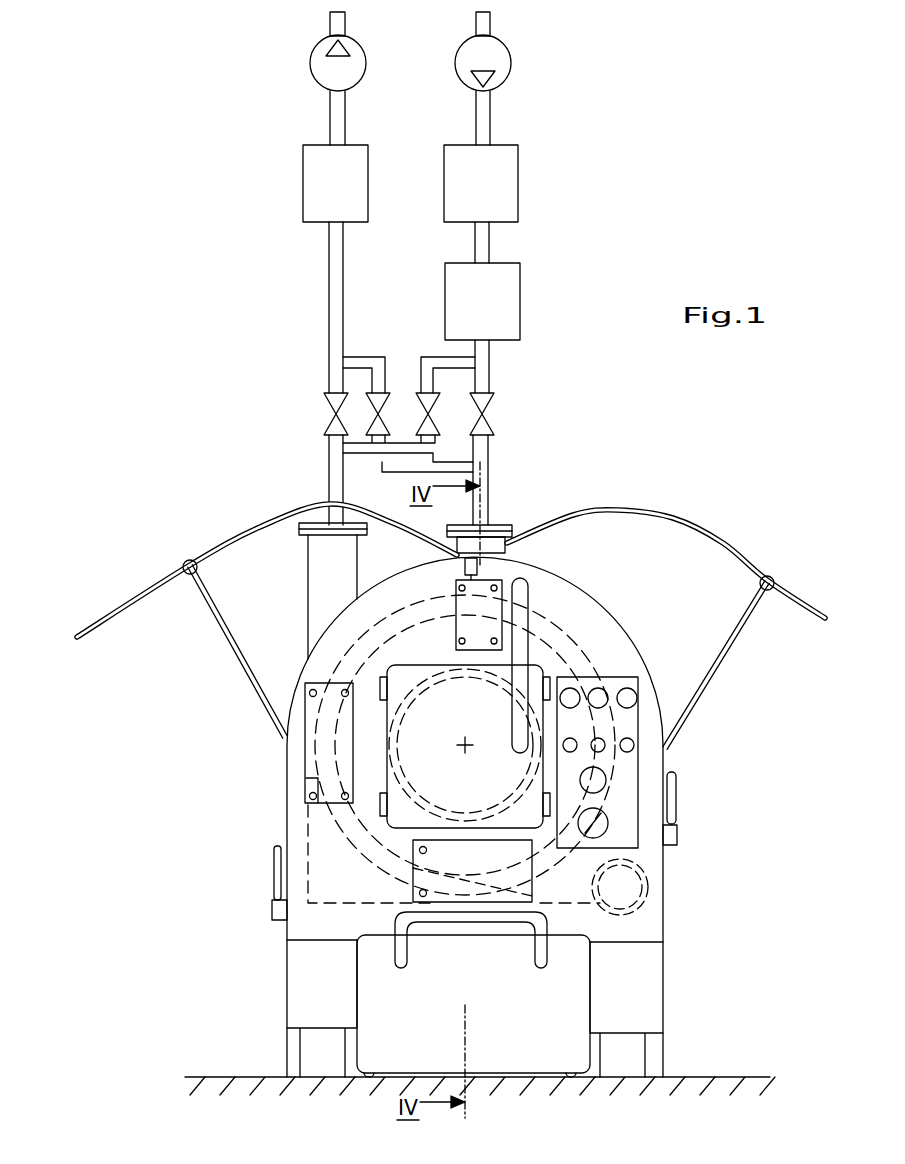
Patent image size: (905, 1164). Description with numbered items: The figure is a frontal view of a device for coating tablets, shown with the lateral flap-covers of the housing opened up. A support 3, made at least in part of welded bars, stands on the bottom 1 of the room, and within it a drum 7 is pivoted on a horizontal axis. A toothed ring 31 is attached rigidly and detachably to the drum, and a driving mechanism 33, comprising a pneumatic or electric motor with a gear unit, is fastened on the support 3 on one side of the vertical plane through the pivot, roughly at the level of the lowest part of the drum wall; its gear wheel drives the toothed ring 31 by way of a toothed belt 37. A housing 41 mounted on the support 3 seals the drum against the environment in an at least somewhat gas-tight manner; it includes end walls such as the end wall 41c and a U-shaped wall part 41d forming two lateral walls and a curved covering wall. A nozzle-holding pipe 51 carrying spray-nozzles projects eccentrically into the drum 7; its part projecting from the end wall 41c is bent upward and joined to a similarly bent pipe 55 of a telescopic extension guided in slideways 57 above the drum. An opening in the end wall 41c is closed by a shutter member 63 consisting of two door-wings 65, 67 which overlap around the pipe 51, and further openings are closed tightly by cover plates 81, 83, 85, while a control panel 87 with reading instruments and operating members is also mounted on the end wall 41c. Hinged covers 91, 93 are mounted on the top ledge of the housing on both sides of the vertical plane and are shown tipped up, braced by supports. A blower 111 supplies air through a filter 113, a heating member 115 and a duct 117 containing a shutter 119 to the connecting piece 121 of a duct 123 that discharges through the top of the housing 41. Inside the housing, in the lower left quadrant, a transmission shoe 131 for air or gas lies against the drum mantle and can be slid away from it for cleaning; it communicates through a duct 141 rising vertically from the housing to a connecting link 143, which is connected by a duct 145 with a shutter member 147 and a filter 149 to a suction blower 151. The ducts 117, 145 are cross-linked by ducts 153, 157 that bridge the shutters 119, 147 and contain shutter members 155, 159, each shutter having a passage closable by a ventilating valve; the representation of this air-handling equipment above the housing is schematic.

The bottom 1 is at (226, 1074).
The support 3 is at (278, 1012).
The drum 7 is at (553, 613).
The toothed ring 31 is at (340, 665).
The driving mechanism 33 is at (650, 903).
The toothed belt 37 is at (627, 818).
The housing 41 is at (287, 798).
The end wall 41c is at (652, 775).
The U-shaped wall part 41d is at (665, 860).
The nozzle-holding pipe 51 is at (547, 663).
The bent pipe 55 is at (522, 577).
The slideways 57 is at (479, 604).
The shutter member 63 is at (515, 835).
The door-wing 65 is at (405, 662).
The door-wing 67 is at (542, 667).
The cover plate 81 is at (413, 868).
The cover plate 83 is at (305, 748).
The cover plate 85 is at (472, 570).
The control panel 87 is at (640, 740).
The hinged cover 91 is at (147, 592).
The hinged cover 93 is at (765, 578).
The blower 111 is at (512, 63).
The filter 113 is at (518, 186).
The heating member 115 is at (520, 288).
The duct 117 is at (489, 353).
The shutter 119 is at (494, 408).
The connecting piece 121 is at (500, 540).
The duct 123 is at (613, 522).
The transmission shoe 131 is at (275, 843).
The duct 141 is at (308, 578).
The connecting link 143 is at (300, 528).
The duct 145 is at (327, 478).
The shutter member 147 is at (330, 393).
The filter 149 is at (303, 185).
The suction blower 151 is at (310, 67).
The duct 153 is at (433, 357).
The shutter member 155 is at (426, 393).
The duct 157 is at (360, 357).
The shutter member 159 is at (330, 418).